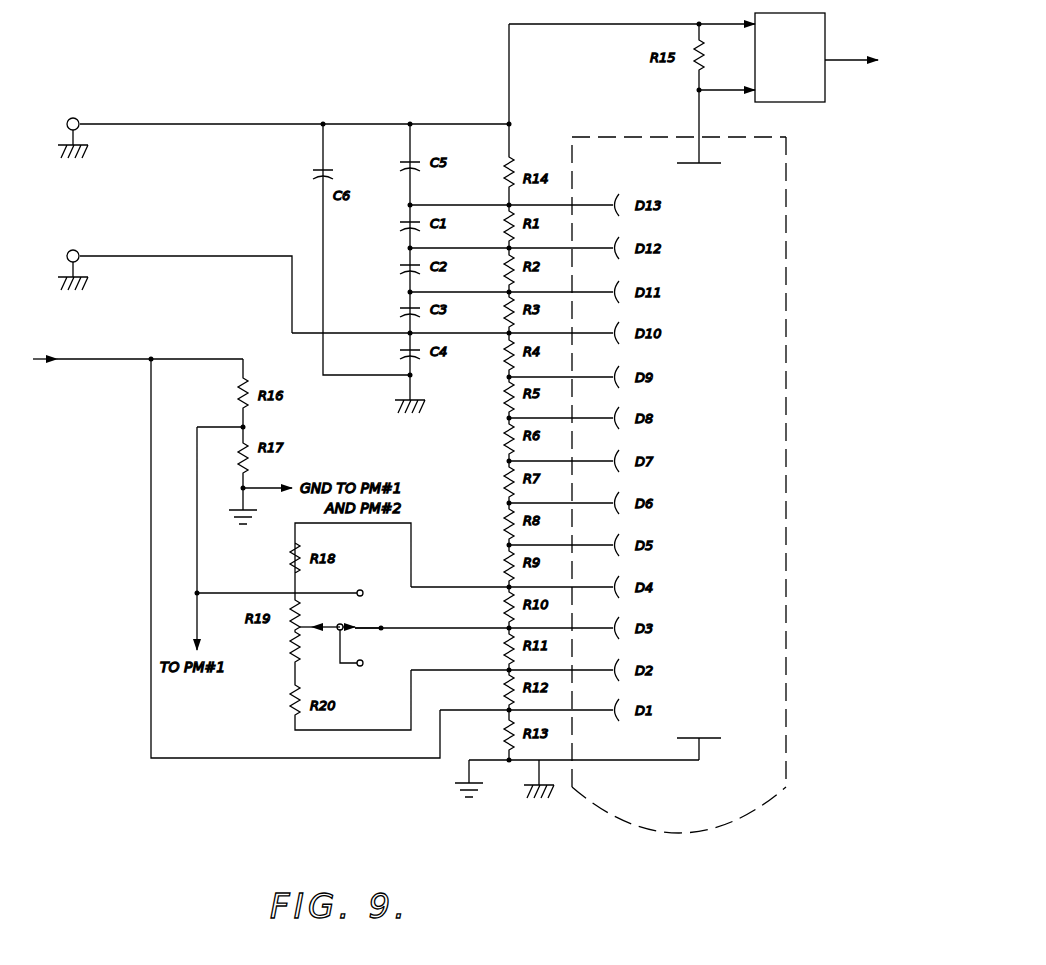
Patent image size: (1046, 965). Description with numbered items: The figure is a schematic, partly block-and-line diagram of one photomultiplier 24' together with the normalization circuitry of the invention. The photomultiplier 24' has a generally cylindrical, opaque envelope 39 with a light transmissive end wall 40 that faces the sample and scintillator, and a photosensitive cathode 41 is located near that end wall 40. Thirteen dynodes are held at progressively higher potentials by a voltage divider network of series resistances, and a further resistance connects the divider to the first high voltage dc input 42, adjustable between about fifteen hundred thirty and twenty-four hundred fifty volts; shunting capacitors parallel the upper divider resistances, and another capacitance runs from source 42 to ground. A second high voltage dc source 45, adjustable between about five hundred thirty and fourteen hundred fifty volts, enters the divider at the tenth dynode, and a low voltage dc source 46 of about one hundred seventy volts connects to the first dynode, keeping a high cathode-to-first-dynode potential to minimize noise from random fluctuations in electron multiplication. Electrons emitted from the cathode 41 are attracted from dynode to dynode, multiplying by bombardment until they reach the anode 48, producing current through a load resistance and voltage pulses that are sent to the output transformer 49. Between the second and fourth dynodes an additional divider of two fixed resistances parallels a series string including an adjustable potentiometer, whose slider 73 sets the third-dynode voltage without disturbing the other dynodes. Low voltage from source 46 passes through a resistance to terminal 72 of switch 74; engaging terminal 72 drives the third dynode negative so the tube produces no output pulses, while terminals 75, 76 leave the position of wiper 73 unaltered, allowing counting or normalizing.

The first high voltage dc input 42 is at (68, 117).
The second high voltage dc source 45 is at (68, 249).
The low voltage dc source 46 is at (34, 360).
The anode 48 is at (701, 165).
The output transformer 49 is at (815, 102).
The photomultiplier 24' is at (717, 462).
The envelope 39 is at (787, 672).
The light transmissive end wall 40 is at (676, 833).
The photosensitive cathode 41 is at (699, 736).
The terminal 72 is at (362, 590).
The slider 73 is at (322, 630).
The switch 74 is at (383, 625).
The terminal 75 is at (343, 624).
The terminal 76 is at (363, 661).